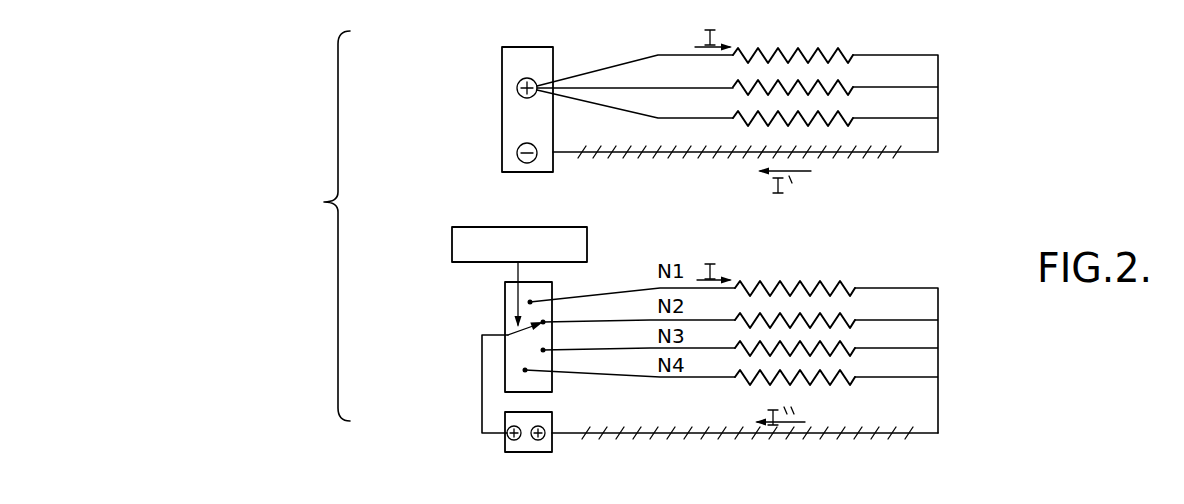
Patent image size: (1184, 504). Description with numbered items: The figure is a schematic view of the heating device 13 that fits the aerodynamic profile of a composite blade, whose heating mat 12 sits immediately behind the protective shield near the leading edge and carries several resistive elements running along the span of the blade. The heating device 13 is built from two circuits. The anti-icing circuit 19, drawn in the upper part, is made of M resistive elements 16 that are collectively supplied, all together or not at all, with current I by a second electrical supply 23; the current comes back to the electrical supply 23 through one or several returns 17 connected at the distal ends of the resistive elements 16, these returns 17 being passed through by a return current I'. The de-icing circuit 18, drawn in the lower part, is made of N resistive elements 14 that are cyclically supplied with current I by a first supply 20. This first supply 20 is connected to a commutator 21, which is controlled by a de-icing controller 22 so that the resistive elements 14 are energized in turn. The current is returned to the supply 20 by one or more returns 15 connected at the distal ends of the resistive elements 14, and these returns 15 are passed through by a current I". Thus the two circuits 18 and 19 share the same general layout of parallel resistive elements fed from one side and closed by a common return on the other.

The heating mat 12 is at (940, 215).
The heating device 13 is at (465, 150).
The resistive elements 14 is at (925, 288).
The returns 15 is at (866, 433).
The resistive elements 16 is at (927, 55).
The returns 17 is at (906, 153).
The de-icing circuit 18 is at (938, 405).
The anti-icing circuit 19 is at (940, 132).
The first supply 20 is at (508, 448).
The commutator 21 is at (508, 307).
The de-icing controller 22 is at (458, 232).
The second electrical supply 23 is at (512, 63).